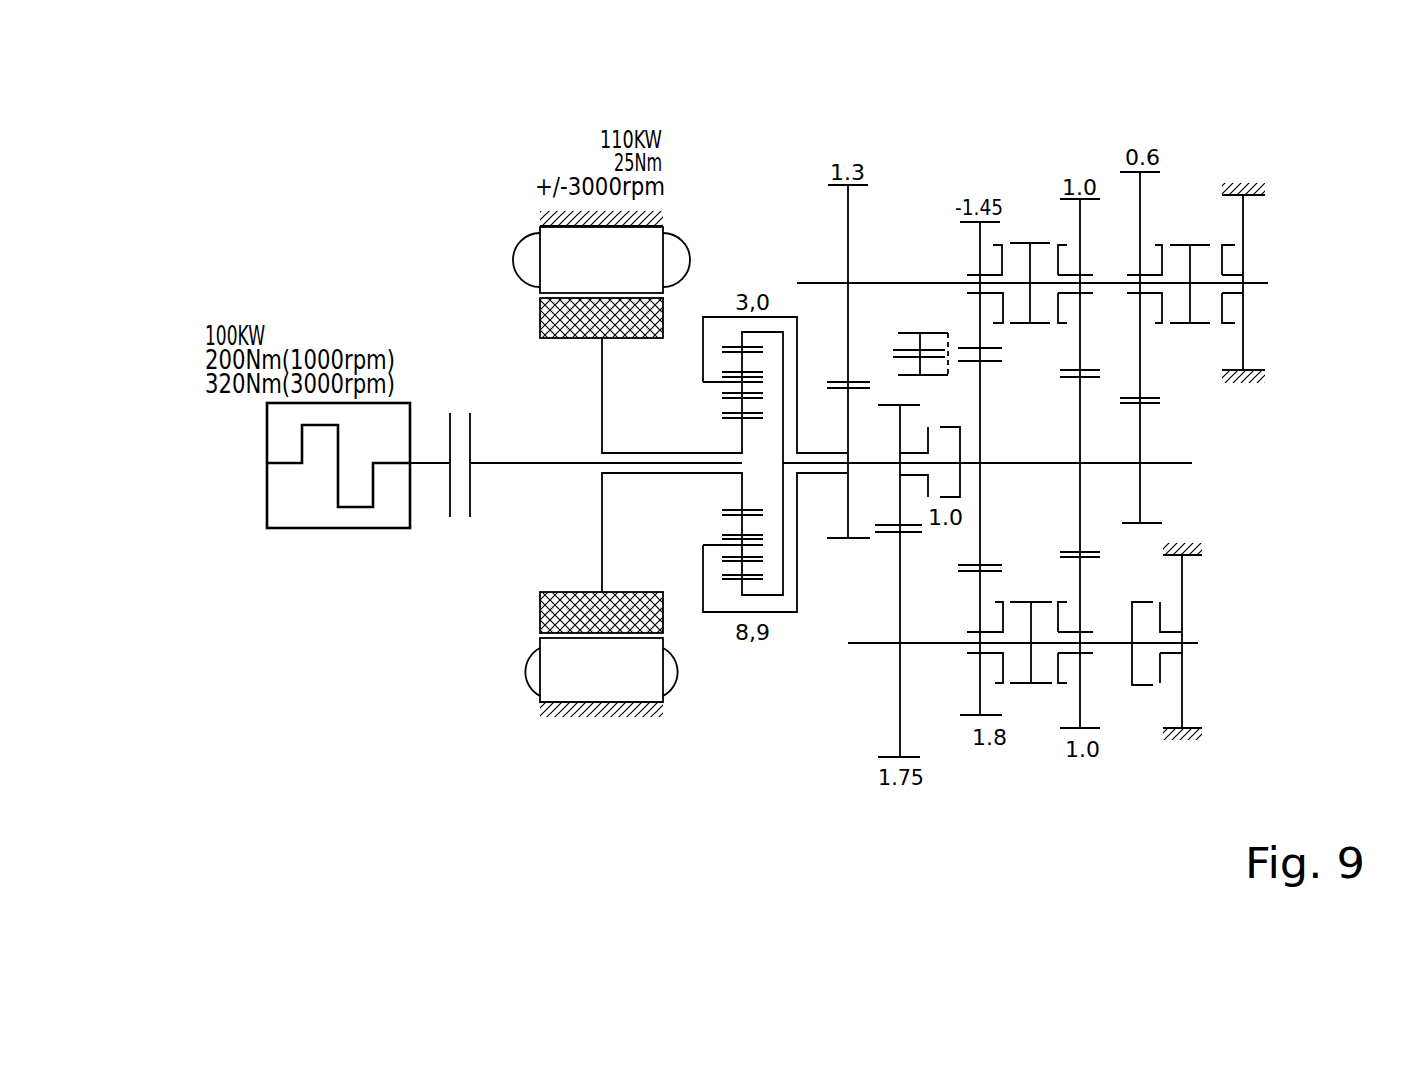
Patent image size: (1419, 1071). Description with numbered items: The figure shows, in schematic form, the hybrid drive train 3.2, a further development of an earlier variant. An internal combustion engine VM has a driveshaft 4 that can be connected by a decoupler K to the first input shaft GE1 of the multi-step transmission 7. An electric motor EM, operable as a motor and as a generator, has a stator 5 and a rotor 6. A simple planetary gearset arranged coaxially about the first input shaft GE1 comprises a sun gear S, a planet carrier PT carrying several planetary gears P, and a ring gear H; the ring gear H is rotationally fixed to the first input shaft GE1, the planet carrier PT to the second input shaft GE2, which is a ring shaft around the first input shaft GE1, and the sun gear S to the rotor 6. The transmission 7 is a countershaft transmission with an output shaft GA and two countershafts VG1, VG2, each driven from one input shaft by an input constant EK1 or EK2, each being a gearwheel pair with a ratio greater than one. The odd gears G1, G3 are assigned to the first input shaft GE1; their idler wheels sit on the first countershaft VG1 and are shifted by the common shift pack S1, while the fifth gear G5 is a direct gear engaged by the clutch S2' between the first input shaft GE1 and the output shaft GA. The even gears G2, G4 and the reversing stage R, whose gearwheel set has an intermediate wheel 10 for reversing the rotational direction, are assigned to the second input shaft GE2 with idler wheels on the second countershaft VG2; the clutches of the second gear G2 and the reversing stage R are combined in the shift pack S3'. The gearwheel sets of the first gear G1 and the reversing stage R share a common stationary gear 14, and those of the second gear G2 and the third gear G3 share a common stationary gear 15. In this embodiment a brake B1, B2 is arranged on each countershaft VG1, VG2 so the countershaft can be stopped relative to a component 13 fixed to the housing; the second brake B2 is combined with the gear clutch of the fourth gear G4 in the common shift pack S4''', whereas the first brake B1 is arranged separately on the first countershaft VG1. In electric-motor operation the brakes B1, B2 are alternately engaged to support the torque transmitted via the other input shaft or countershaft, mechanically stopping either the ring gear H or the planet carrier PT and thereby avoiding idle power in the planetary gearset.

The internal combustion engine VM is at (305, 486).
The driveshaft 4 is at (435, 463).
The first input shaft GE1 is at (523, 463).
The decoupler K is at (456, 530).
The hybrid drive train 3.2 is at (468, 635).
The electric motor EM is at (495, 248).
The stator 5 is at (560, 255).
The rotor 6 is at (555, 317).
The planet carrier PT is at (703, 382).
The ring gear H is at (772, 598).
The sun gear S is at (740, 490).
The planetary gears P is at (740, 528).
The second input shaft GE2 is at (808, 477).
The output shaft GA is at (1192, 463).
The multi-step transmission 7 is at (820, 241).
The second input constant EK2 is at (848, 150).
The intermediate wheel 10 is at (920, 333).
The second countershaft VG2 is at (1262, 283).
The reversing stage R is at (981, 183).
The shift pack S3' is at (1188, 360).
The second gear G2 is at (1080, 165).
The common stationary gear 15 is at (1080, 397).
The fourth gear G4 is at (1145, 145).
The common stationary gear 14 is at (1000, 427).
The shift pack S4''' is at (1224, 188).
The second brake B2 is at (1212, 334).
The component fixed to the housing 13 is at (1245, 190).
The first countershaft VG1 is at (1198, 643).
The fifth gear G5 is at (932, 545).
The first input constant EK1 is at (882, 665).
The clutch S2' is at (970, 642).
The first gear G1 is at (1005, 748).
The shift pack S1 is at (1153, 603).
The third gear G3 is at (1107, 762).
The first brake B1 is at (1142, 697).